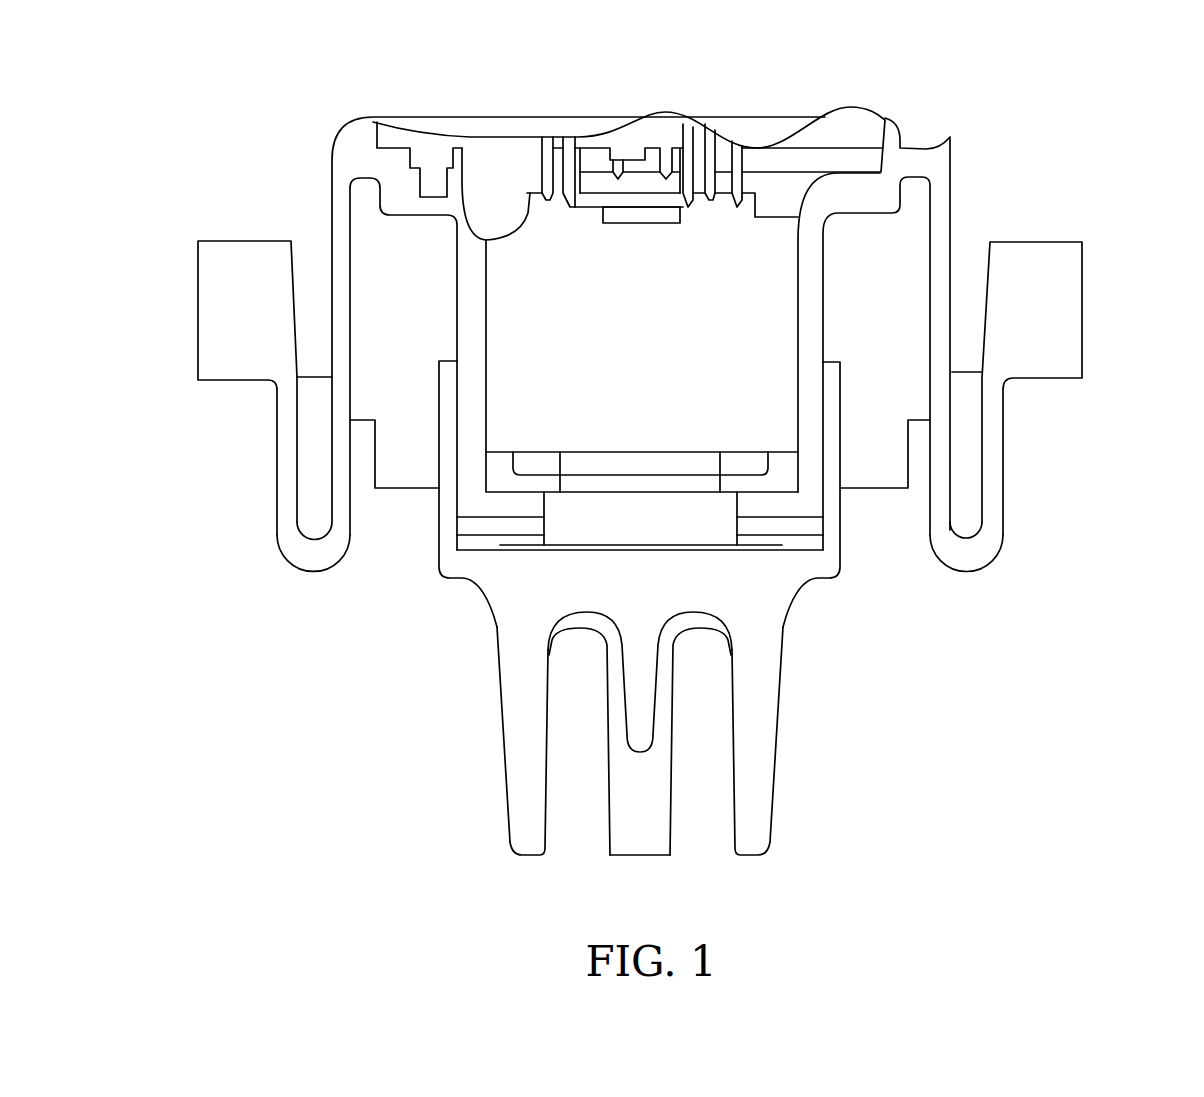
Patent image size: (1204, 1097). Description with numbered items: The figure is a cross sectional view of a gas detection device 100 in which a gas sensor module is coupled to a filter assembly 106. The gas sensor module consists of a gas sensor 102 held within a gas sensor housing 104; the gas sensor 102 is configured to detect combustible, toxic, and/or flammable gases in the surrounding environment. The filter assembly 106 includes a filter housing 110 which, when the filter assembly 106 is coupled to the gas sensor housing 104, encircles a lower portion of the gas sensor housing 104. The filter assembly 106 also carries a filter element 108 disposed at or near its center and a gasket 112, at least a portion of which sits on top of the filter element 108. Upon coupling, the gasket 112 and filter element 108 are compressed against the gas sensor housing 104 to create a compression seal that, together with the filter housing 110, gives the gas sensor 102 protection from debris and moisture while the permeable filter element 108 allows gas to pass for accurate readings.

The gas detection device 100 is at (1032, 126).
The gas sensor 102 is at (645, 265).
The gas sensor housing 104 is at (473, 223).
The filter assembly 106 is at (698, 602).
The filter element 108 is at (623, 551).
The filter housing 110 is at (522, 708).
The gasket 112 is at (786, 542).